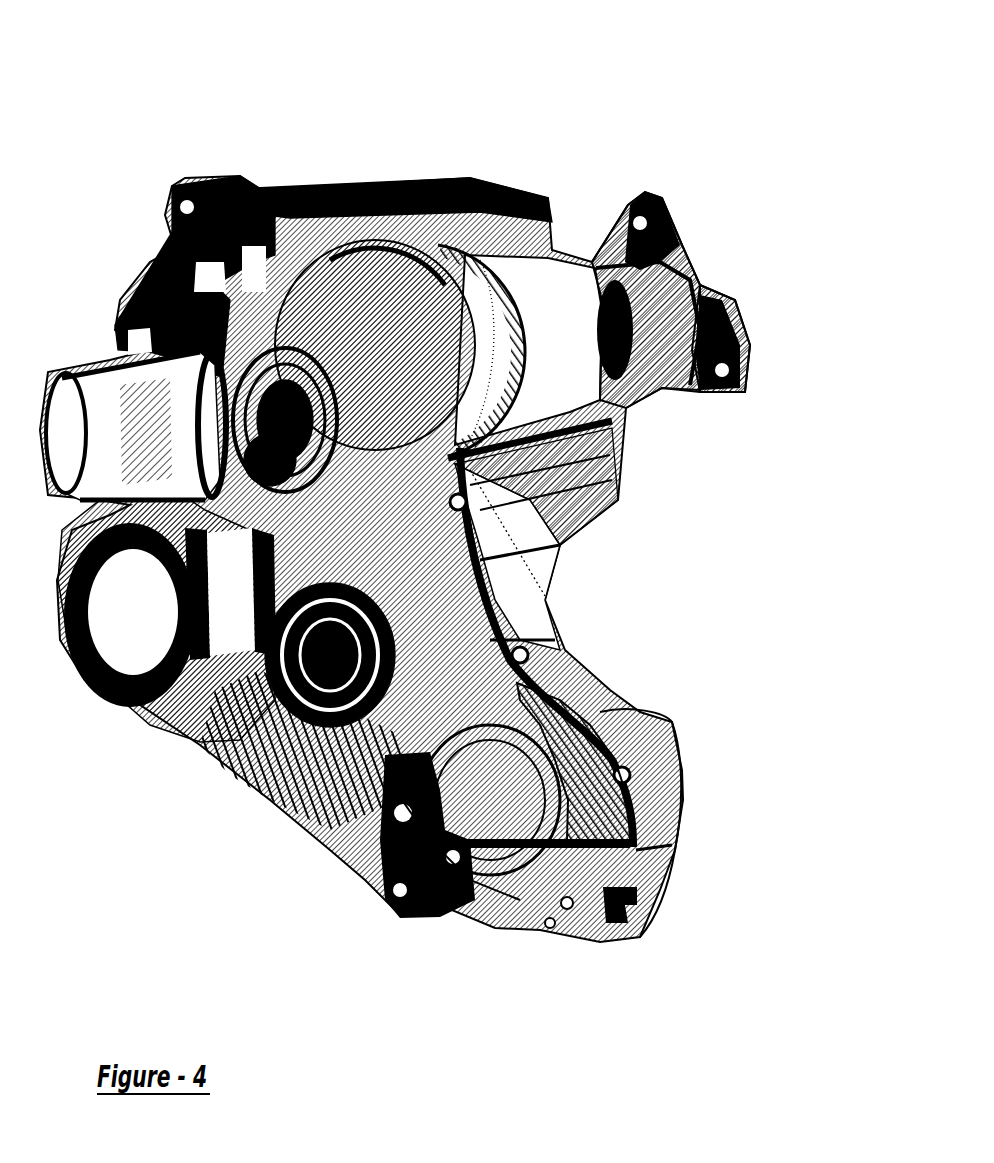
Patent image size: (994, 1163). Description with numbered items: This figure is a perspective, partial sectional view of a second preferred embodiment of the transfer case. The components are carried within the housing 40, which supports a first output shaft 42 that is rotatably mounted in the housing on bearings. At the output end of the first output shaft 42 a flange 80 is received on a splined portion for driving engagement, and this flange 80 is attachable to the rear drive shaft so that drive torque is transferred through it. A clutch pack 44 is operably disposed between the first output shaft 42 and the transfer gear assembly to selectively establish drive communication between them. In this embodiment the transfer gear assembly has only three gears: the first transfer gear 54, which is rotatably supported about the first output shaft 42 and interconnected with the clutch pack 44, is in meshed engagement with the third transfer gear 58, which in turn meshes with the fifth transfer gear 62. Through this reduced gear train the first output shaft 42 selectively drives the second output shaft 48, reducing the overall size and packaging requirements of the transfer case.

The housing 40 is at (480, 185).
The clutch pack 44 is at (530, 313).
The first transfer gear 54 is at (360, 272).
The flange 80 is at (674, 232).
The first output shaft 42 is at (730, 298).
The third transfer gear 58 is at (475, 560).
The fifth transfer gear 62 is at (603, 730).
The second output shaft 48 is at (415, 815).